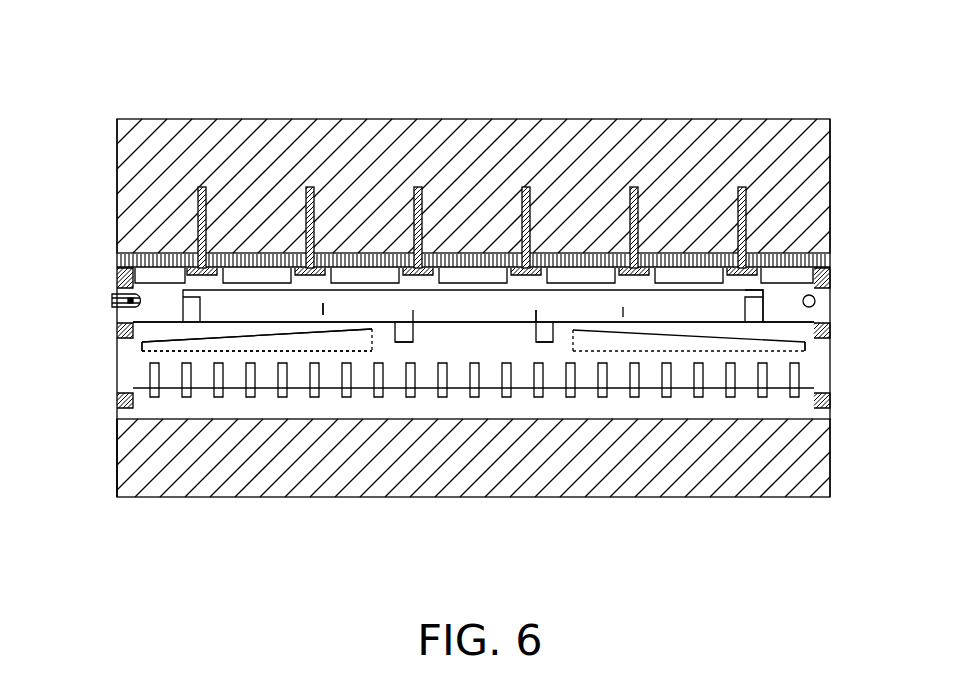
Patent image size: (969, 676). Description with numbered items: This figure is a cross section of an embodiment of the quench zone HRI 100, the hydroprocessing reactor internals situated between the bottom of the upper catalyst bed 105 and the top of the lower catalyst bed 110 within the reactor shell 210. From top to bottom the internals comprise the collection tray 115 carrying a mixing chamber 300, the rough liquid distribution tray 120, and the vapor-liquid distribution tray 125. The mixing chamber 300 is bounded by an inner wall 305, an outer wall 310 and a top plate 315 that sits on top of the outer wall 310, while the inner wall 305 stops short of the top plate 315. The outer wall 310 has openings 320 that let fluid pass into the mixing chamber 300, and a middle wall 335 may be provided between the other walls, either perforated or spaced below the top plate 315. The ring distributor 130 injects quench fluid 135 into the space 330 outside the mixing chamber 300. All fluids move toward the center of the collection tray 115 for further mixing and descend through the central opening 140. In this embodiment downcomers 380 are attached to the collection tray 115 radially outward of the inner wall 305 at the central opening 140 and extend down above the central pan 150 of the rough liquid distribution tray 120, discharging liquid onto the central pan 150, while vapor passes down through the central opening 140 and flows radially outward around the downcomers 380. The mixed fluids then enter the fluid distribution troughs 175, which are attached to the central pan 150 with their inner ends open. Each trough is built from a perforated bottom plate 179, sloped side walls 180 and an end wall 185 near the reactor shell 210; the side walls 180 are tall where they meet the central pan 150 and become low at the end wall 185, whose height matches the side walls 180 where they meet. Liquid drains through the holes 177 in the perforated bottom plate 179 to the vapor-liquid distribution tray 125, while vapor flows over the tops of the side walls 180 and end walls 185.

The quench zone HRI 100 is at (102, 54).
The upper catalyst bed 105 is at (832, 165).
The lower catalyst bed 110 is at (832, 454).
The collection tray 115 is at (800, 320).
The rough liquid distribution tray 120 is at (820, 348).
The vapor-liquid distribution tray 125 is at (820, 380).
The ring distributor 130 is at (140, 304).
The quench fluid 135 is at (112, 303).
The central opening 140 is at (480, 320).
The central pan 150 is at (455, 350).
The fluid distribution troughs 175 is at (330, 342).
The holes 177 is at (226, 352).
The perforated bottom plate 179 is at (258, 350).
The side walls 180 is at (200, 344).
The end wall 185 is at (192, 336).
The reactor shell 210 is at (117, 466).
The mixing chamber 300 is at (675, 318).
The inner wall 305 is at (532, 318).
The outer wall 310 is at (764, 291).
The top plate 315 is at (321, 292).
The openings 320 is at (192, 303).
The space 330 is at (789, 307).
The middle wall 335 is at (328, 305).
The downcomers 380 is at (396, 343).